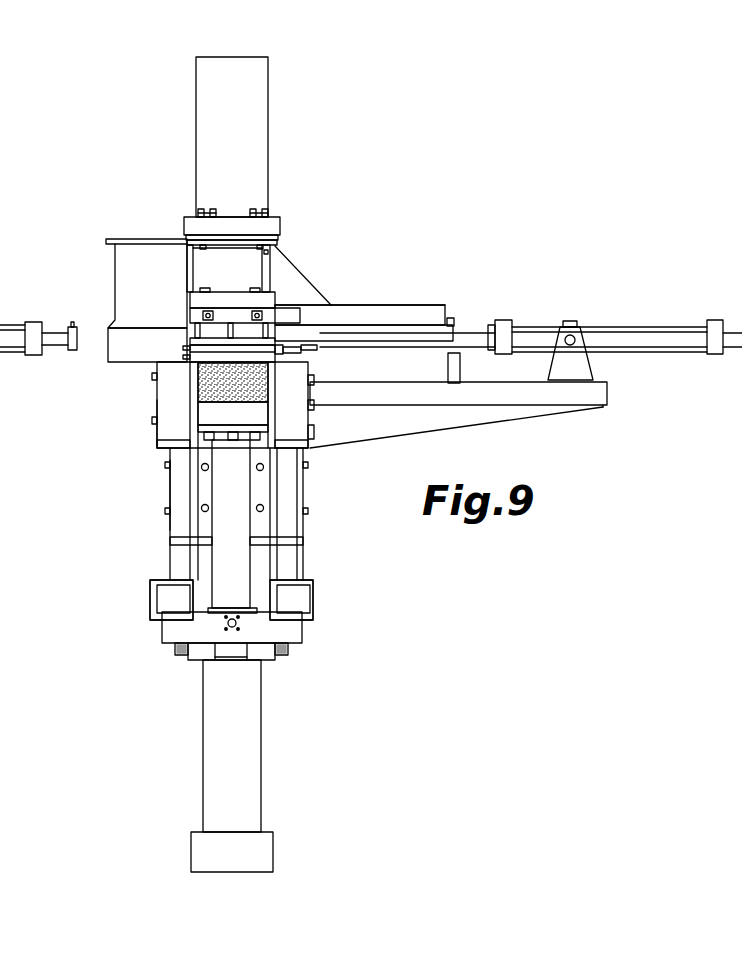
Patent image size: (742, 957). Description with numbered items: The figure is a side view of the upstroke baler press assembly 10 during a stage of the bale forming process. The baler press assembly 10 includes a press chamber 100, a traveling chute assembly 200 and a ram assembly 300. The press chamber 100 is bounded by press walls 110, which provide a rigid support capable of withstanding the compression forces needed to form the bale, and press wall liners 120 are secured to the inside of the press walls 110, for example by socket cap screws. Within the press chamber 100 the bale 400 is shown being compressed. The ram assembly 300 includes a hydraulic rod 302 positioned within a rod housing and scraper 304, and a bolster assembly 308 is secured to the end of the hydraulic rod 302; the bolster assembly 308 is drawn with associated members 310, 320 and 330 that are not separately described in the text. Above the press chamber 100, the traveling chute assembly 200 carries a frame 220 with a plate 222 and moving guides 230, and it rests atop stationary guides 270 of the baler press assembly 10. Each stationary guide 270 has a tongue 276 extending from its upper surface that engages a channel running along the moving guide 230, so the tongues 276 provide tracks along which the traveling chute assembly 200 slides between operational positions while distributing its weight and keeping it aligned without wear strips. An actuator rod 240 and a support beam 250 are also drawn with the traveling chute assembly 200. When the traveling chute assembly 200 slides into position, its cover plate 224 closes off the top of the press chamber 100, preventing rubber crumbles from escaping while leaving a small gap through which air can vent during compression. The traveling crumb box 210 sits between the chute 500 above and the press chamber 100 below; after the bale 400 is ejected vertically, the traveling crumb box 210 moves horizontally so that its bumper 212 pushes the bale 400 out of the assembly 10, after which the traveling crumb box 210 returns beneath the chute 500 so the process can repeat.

The baler press assembly 10 is at (390, 160).
The press chamber 100 is at (157, 514).
The press walls 110 is at (165, 390).
The press wall liners 120 is at (272, 480).
The traveling chute assembly 200 is at (144, 235).
The traveling crumb box 210 is at (118, 277).
The bumper 212 is at (108, 352).
The support frame 220 is at (273, 264).
The mounting plate 222 is at (236, 238).
The cover plate 224 is at (284, 352).
The moving guides 230 is at (278, 302).
The actuator rod 240 is at (629, 336).
The support beam 250 is at (552, 395).
The stationary guides 270 is at (384, 315).
The tongue 276 is at (424, 305).
The ram assembly 300 is at (307, 531).
The hydraulic rod 302 is at (220, 571).
The rod housing and scraper 304 is at (283, 610).
The bolster assembly 308 is at (148, 400).
The lower plate 310 is at (200, 437).
The die plate 320 is at (264, 432).
The die block 330 is at (258, 416).
The bale 400 is at (254, 392).
The chute 500 is at (197, 104).